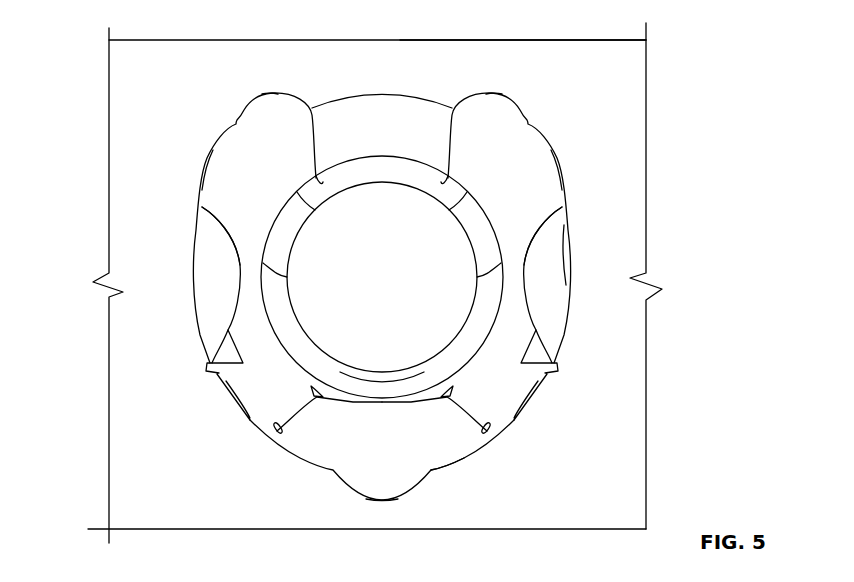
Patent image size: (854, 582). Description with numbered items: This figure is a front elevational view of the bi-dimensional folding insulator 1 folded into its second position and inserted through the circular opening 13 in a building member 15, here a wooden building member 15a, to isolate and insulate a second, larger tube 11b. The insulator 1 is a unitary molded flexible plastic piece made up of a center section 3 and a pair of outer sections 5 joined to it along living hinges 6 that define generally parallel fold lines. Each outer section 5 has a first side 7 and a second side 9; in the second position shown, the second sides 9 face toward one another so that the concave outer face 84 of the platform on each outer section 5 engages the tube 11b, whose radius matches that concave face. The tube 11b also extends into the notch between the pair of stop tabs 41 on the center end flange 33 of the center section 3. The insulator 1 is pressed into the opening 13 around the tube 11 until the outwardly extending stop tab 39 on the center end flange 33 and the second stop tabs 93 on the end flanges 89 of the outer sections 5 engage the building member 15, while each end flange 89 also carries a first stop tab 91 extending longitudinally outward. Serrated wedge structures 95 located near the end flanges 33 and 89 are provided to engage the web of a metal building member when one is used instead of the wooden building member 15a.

The bi-dimensional folding insulator 1 is at (541, 400).
The center section 3 is at (297, 458).
The outer sections 5 is at (219, 326).
The living hinges 6 is at (277, 432).
The first side 7 is at (237, 250).
The second side 9 is at (315, 206).
The tube 11 is at (387, 184).
The second tube 11b is at (384, 373).
The circular opening 13 is at (568, 245).
The building member 15 is at (622, 352).
The wooden building member 15a is at (560, 38).
The center end flange 33 is at (457, 463).
The stop tab 39 is at (406, 498).
The stop tabs 41 is at (316, 390).
The concave outer face 84 is at (288, 277).
The end flange 89 is at (236, 123).
The first stop tab 91 is at (275, 91).
The second stop tab 93 is at (208, 150).
The serrated wedge structures 95 is at (222, 375).